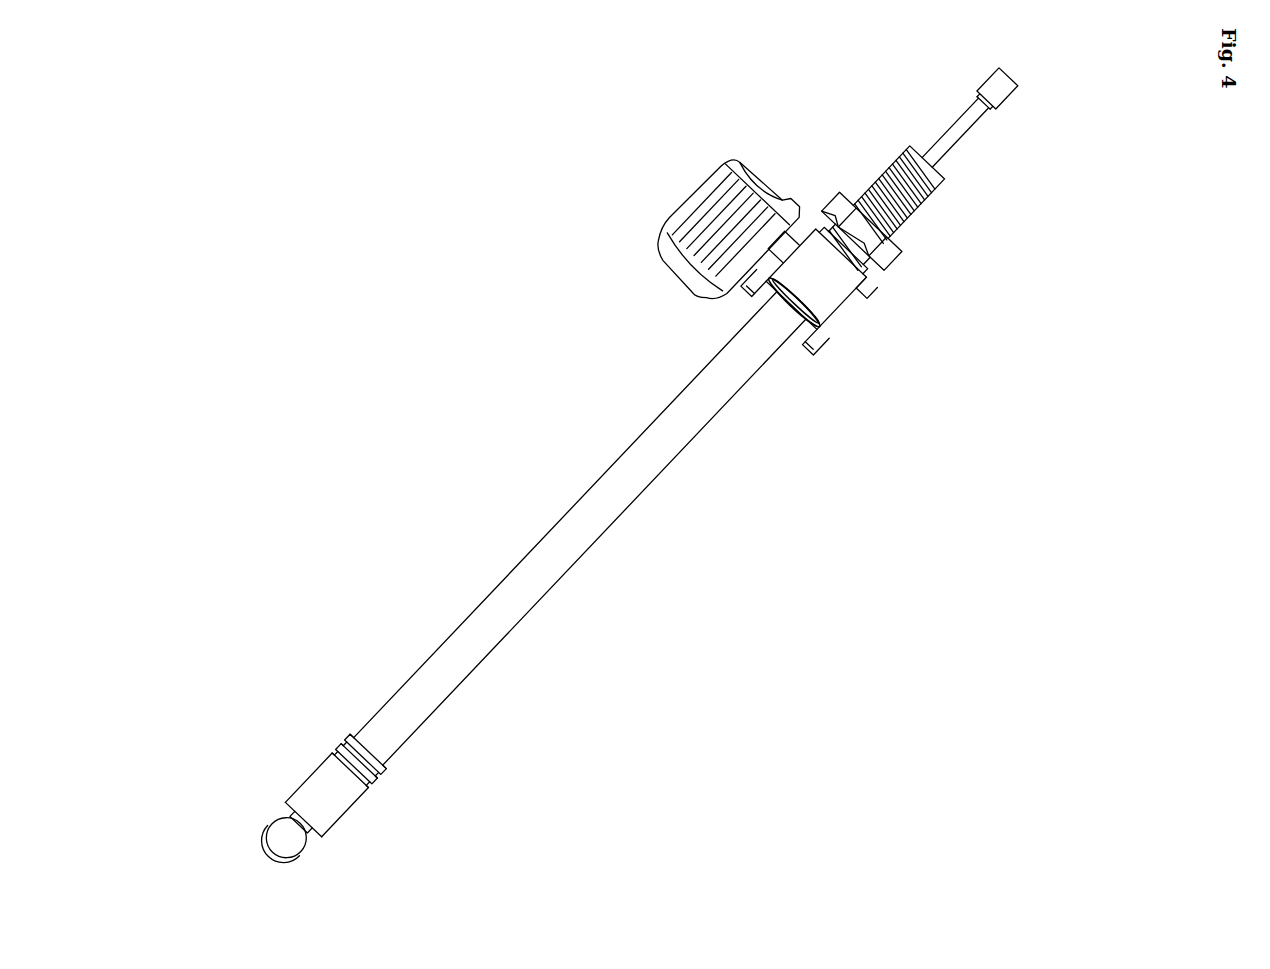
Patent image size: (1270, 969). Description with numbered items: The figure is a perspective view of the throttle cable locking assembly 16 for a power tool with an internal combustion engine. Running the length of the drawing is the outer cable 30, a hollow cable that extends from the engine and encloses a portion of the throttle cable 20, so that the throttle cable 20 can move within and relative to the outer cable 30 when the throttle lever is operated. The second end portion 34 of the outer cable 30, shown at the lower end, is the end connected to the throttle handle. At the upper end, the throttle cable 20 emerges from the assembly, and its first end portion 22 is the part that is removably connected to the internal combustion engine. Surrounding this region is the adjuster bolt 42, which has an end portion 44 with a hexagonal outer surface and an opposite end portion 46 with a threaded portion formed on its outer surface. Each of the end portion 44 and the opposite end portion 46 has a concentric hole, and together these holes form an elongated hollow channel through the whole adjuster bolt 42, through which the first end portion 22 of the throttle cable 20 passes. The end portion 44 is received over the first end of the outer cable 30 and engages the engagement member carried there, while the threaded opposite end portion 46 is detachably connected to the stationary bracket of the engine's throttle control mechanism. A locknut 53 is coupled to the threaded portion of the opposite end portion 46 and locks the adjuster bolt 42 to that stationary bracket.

The throttle cable locking assembly 16 is at (331, 206).
The throttle cable 20 is at (963, 141).
The first end portion 22 is at (988, 113).
The outer cable 30 is at (618, 468).
The second end portion 34 is at (307, 784).
The adjuster bolt 42 is at (866, 276).
The end portion 44 is at (830, 304).
The opposite end portion 46 is at (907, 221).
The locknut 53 is at (848, 204).